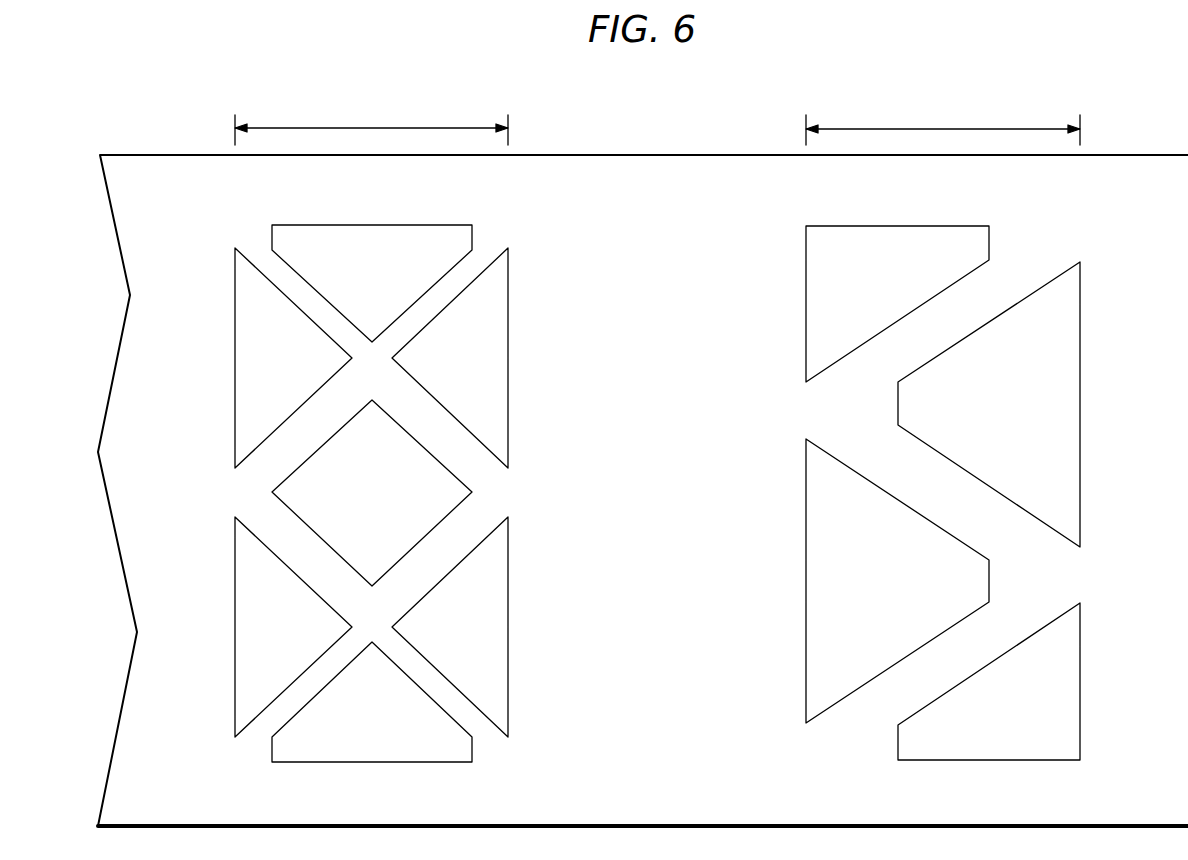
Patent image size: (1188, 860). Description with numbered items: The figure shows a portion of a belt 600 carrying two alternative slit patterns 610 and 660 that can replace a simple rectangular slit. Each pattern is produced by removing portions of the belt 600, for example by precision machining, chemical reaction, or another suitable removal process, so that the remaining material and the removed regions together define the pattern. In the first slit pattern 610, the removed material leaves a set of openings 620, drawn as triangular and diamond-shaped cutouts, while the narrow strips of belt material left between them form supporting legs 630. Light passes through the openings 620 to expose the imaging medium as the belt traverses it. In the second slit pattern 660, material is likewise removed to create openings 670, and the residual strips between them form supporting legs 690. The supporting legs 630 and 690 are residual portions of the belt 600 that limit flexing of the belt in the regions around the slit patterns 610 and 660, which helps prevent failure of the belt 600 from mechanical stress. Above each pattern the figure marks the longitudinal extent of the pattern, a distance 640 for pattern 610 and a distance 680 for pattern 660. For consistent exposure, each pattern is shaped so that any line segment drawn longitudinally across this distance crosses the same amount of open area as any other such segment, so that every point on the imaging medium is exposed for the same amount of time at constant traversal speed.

The belt 600 is at (165, 155).
The slit pattern 610 is at (558, 268).
The openings 620 is at (375, 225).
The supporting legs 630 is at (280, 275).
The distance 640 is at (367, 127).
The slit pattern 660 is at (754, 268).
The openings 670 is at (898, 226).
The distance 680 is at (942, 128).
The supporting legs 690 is at (977, 510).